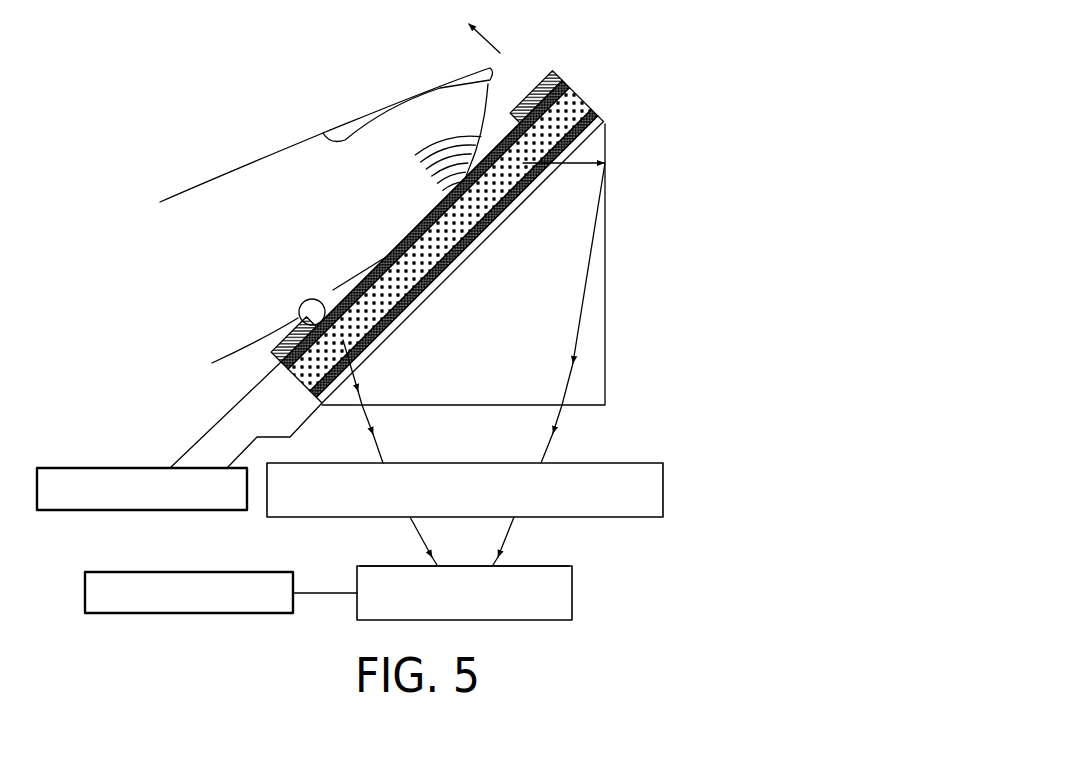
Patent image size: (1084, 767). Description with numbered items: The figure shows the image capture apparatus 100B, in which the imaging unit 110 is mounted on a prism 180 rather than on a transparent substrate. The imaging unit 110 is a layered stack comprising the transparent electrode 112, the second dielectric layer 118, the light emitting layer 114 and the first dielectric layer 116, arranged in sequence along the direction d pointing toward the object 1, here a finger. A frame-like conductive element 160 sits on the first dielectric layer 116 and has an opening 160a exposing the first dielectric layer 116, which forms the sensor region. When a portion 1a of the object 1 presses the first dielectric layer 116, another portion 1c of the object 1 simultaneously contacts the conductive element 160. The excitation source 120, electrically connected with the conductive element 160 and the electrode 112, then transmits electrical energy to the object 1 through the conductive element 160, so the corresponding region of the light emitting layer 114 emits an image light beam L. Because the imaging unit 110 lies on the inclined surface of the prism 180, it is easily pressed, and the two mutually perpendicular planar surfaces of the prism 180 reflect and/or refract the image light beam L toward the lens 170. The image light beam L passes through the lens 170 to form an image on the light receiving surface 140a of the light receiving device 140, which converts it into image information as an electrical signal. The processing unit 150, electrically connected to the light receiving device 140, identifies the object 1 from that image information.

The object 1 is at (248, 162).
The portion of the object 1a is at (519, 126).
The another portion of the object 1c is at (301, 301).
The direction d is at (500, 53).
The imaging unit 110 is at (489, 235).
The electrode 112 is at (605, 126).
The light emitting layer 114 is at (565, 117).
The first dielectric layer 116 is at (695, 168).
The second dielectric layer 118 is at (598, 117).
The conductive element 160 is at (565, 77).
The opening 160a is at (500, 136).
The prism 180 is at (597, 334).
The excitation source 120 is at (78, 467).
The processing unit 150 is at (125, 571).
The lens 170 is at (634, 490).
The light receiving device 140 is at (550, 593).
The light receiving surface 140a is at (560, 562).
The image light beam L is at (580, 312).
The image capture apparatus 100B is at (798, 641).